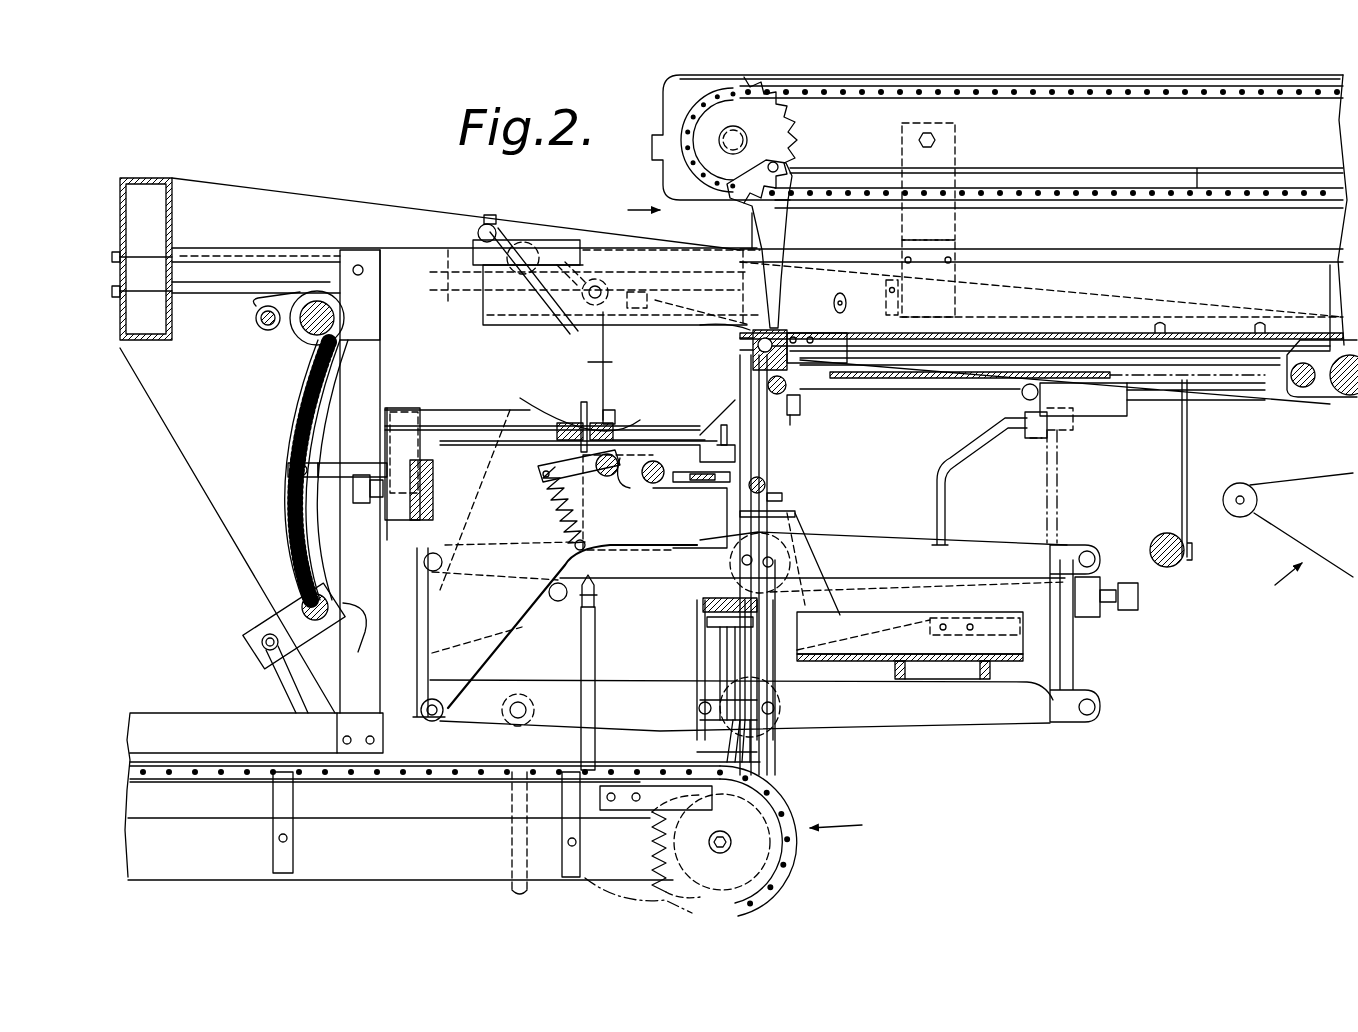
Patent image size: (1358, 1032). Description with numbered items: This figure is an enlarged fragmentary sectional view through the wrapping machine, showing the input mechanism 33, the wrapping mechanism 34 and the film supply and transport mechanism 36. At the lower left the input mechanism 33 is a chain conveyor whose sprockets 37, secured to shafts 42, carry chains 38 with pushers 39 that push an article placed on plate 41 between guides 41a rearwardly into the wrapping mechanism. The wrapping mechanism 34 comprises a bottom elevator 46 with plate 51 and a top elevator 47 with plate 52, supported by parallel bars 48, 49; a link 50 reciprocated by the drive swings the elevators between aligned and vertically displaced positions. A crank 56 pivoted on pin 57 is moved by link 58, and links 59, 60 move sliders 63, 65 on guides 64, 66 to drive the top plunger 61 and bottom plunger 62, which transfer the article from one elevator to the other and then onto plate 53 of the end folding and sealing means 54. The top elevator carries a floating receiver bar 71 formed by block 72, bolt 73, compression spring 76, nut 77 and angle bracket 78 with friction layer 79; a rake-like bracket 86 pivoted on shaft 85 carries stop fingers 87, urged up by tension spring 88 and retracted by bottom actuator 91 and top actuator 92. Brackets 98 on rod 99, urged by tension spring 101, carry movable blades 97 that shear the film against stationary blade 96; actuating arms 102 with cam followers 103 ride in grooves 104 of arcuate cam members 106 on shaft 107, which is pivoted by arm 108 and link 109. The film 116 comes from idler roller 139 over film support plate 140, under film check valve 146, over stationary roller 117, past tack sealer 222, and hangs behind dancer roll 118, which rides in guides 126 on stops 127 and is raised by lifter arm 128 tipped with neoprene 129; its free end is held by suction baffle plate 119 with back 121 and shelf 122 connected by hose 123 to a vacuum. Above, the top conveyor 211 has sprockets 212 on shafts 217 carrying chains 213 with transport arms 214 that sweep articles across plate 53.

The top conveyor 211 is at (656, 150).
The sprockets 212 is at (772, 128).
The shafts 217 is at (740, 153).
The chains 213 is at (1045, 193).
The transport arms 214 is at (790, 223).
The end folding and sealing means 54 is at (627, 209).
The film check valve 146 is at (820, 358).
The plate 53 is at (1003, 334).
The guide 66 is at (892, 396).
The film support plate 140 is at (962, 387).
The slider 65 is at (1108, 416).
The film 116 is at (1323, 403).
The bottom plunger 62 is at (955, 466).
The idler roller 139 is at (1256, 512).
The film supply and transport mechanism 36 is at (1276, 583).
The bottom elevator 46 is at (1063, 680).
The wrapping mechanism 34 is at (1145, 635).
The plate 51 is at (872, 657).
The arms or bars 49 is at (865, 540).
The lifter arm 128 is at (820, 576).
The arms or bars 48 is at (960, 718).
The back 121 is at (780, 590).
The guides 126 is at (780, 458).
The top actuator 92 is at (748, 347).
The tack sealer 222 is at (740, 330).
The stationary roller 117 is at (780, 396).
The stationary blade 96 is at (802, 405).
The dancer roll 118 is at (765, 483).
The stop 127 is at (785, 494).
The piece of neoprene 129 is at (797, 515).
The suction baffle plate 119 is at (697, 617).
The shelf 122 is at (725, 630).
The guide means 64 is at (452, 258).
The link 60 is at (662, 322).
The slider 63 is at (523, 242).
The link 59 is at (580, 270).
The top plunger 61 is at (545, 313).
The bracket or crank 56 is at (614, 366).
The arcuate cam member 106 is at (287, 527).
The cam follower 103 is at (300, 464).
The actuating arm 102 is at (350, 470).
The groove 104 is at (300, 480).
The arm 108 is at (270, 608).
The shaft 107 is at (360, 628).
The link 109 is at (282, 692).
The link 58 is at (380, 729).
The block 72 is at (552, 447).
The bolt 73 is at (575, 436).
The compression spring 76 is at (580, 432).
The nut 77 is at (586, 425).
The floating receiver bar 71 is at (592, 424).
The angle shaped bracket 78 is at (607, 430).
The layer of high friction material 79 is at (640, 430).
The plate 52 is at (700, 440).
The stop fingers 87 is at (724, 425).
The shaft 85 is at (608, 476).
The rake-like bracket 86 is at (628, 490).
The rod 99 is at (655, 484).
The movable blades 97 is at (690, 482).
The brackets 98 is at (655, 502).
The tension spring 88 is at (555, 505).
The tension spring 101 is at (575, 541).
The top elevator 47 is at (672, 550).
The pin 57 is at (560, 601).
The bottom actuator 91 is at (596, 655).
The guides 41a is at (165, 728).
The plate 41 is at (251, 765).
The chains 38 is at (185, 778).
The pushers 39 is at (448, 780).
The link 50 is at (515, 886).
The hose 123 is at (762, 756).
The input mechanism 33 is at (854, 821).
The shafts 42 is at (730, 845).
The sprockets 37 is at (780, 868).